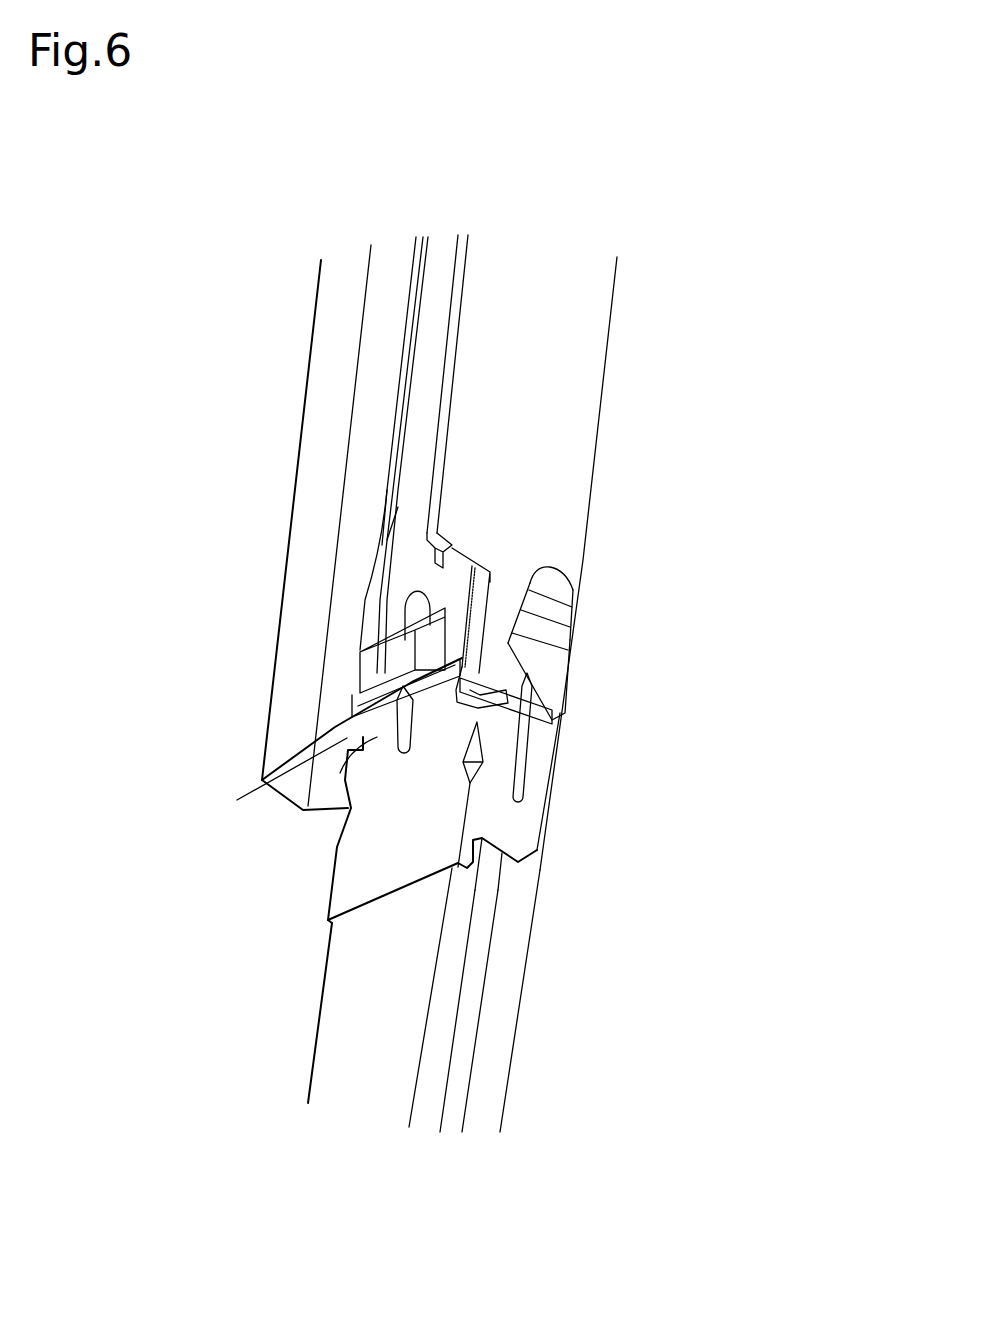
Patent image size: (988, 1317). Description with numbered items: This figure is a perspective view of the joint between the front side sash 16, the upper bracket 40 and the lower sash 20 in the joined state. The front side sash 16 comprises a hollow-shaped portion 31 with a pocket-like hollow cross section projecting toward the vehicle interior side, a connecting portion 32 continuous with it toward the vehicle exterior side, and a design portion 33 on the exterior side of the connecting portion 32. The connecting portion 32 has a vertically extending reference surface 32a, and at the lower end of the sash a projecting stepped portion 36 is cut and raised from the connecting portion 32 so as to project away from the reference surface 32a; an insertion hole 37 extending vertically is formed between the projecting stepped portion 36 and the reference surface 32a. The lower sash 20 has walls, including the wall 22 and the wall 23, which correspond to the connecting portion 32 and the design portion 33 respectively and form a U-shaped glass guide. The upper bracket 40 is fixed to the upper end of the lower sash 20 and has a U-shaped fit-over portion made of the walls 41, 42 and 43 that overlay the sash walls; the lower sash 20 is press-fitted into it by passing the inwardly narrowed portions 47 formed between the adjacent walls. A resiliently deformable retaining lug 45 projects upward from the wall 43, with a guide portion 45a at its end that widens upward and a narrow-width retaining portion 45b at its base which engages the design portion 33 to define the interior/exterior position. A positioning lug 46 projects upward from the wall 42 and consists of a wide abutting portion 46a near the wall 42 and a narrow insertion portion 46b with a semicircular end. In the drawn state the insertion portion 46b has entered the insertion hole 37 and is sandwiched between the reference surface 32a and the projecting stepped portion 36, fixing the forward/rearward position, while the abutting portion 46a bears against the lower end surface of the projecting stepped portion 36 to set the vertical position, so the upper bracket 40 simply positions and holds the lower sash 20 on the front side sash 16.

The front side sash 16 is at (606, 356).
The lower sash 20 is at (500, 1113).
The wall 22 is at (362, 1030).
The wall 23 is at (478, 1077).
The hollow-shaped portion 31 is at (300, 543).
The connecting portion 32 is at (417, 413).
The reference surface 32a is at (407, 548).
The design portion 33 is at (575, 422).
The projecting stepped portion 36 is at (440, 713).
The insertion hole 37 is at (276, 778).
The upper bracket 40 is at (332, 897).
The wall 41 is at (332, 923).
The wall 42 is at (367, 840).
The wall 43 is at (515, 820).
The retaining lug 45 is at (697, 669).
The guide portion 45a is at (565, 595).
The narrow-width retaining portion 45b is at (540, 678).
The positioning lug 46 is at (203, 652).
The abutting portion 46a is at (352, 716).
The insertion portion 46b is at (407, 613).
The inwardly narrowed portion 47 is at (482, 767).